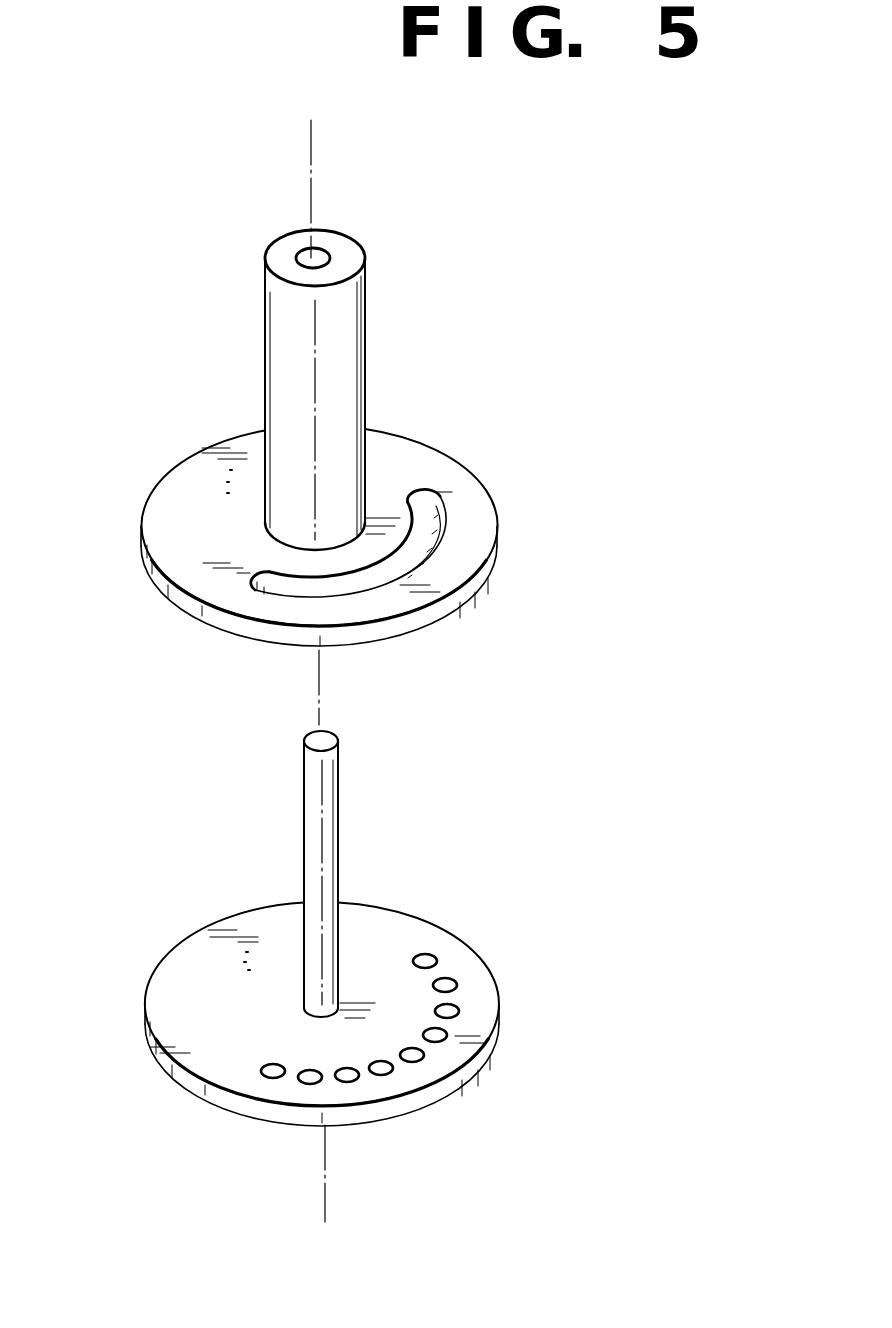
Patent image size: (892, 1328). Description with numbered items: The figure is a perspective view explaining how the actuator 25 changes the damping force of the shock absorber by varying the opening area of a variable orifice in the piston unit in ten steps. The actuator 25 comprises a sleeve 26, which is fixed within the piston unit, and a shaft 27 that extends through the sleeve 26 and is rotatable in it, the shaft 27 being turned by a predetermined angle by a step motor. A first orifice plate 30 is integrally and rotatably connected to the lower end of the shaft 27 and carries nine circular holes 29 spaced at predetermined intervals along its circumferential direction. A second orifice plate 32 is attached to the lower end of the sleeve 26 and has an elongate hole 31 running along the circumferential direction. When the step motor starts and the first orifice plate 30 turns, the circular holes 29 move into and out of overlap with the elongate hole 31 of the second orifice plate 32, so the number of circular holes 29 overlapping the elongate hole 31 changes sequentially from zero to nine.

The actuator 25 is at (512, 326).
The sleeve 26 is at (350, 325).
The shaft 27 is at (329, 831).
The circular holes 29 is at (459, 1008).
The first orifice plate 30 is at (189, 950).
The elongate hole 31 is at (430, 527).
The second orifice plate 32 is at (173, 483).